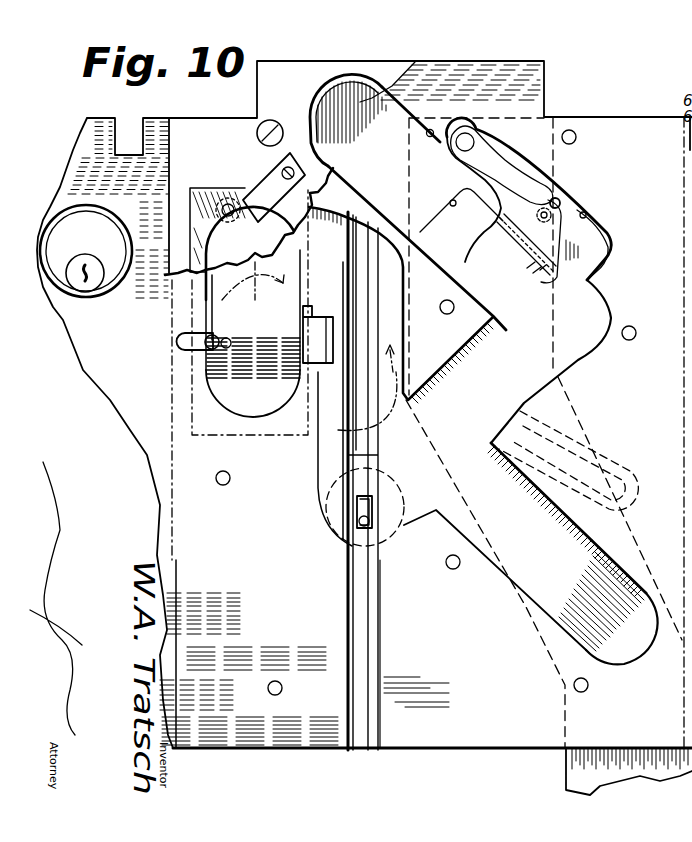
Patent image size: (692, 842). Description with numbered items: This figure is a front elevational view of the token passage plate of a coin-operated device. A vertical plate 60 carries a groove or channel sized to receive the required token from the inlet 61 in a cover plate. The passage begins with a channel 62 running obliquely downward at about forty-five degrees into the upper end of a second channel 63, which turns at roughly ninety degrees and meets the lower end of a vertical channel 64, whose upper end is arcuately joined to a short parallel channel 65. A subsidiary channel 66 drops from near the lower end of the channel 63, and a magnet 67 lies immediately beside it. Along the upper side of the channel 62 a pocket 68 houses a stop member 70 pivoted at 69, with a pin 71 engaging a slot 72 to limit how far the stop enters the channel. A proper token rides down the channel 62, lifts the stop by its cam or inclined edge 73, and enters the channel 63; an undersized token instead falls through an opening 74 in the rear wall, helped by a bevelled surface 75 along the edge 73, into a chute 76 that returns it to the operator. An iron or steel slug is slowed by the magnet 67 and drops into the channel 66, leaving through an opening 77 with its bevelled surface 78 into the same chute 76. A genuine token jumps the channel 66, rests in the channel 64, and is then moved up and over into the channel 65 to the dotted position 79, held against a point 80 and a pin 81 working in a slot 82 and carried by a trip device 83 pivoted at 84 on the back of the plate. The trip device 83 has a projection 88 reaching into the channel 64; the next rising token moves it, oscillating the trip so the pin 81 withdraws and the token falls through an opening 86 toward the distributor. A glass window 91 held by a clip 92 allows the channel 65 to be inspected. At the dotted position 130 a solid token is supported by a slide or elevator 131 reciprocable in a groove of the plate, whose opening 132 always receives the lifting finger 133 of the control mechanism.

The vertical plate 60 is at (614, 122).
The inlet 61 is at (312, 97).
The channel 62 is at (438, 130).
The second channel 63 is at (572, 348).
The vertical channel 64 is at (320, 461).
The short channel 65 is at (214, 303).
The subsidiary channel 66 is at (488, 556).
The magnet 67 is at (590, 432).
The pocket 68 is at (586, 216).
The pivot 69 is at (502, 165).
The stop member 70 is at (560, 240).
The pin 71 is at (538, 215).
The slot 72 is at (558, 203).
The cam or inclined edge 73 is at (514, 240).
The opening 74 is at (449, 203).
The bevelled surface 75 is at (530, 263).
The chute 76 is at (553, 155).
The opening 77 is at (622, 646).
The bevelled surface 78 is at (600, 618).
The token rest position 79 is at (260, 281).
The point 80 is at (298, 336).
The pin 81 is at (218, 340).
The slot 82 is at (186, 343).
The trip device 83 is at (262, 272).
The pivot 84 is at (226, 203).
The opening 86 is at (240, 417).
The projection 88 is at (330, 312).
The glass window 91 is at (194, 192).
The clip 92 is at (280, 177).
The token position 130 is at (402, 488).
The slide or elevator 131 is at (379, 571).
The opening 132 is at (372, 509).
The lifting finger 133 is at (360, 524).